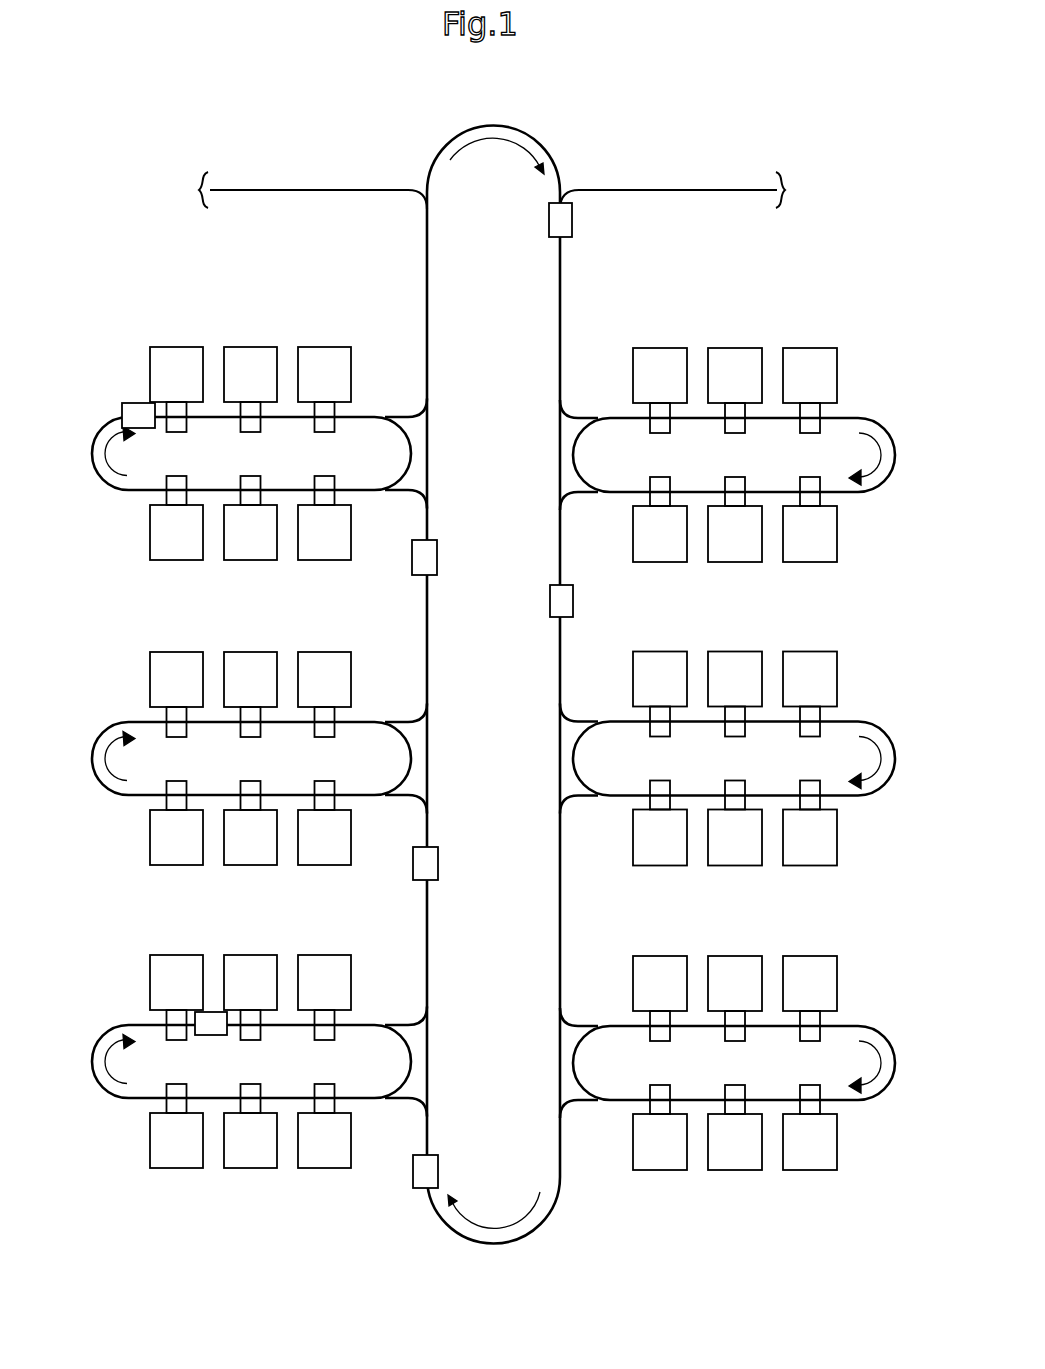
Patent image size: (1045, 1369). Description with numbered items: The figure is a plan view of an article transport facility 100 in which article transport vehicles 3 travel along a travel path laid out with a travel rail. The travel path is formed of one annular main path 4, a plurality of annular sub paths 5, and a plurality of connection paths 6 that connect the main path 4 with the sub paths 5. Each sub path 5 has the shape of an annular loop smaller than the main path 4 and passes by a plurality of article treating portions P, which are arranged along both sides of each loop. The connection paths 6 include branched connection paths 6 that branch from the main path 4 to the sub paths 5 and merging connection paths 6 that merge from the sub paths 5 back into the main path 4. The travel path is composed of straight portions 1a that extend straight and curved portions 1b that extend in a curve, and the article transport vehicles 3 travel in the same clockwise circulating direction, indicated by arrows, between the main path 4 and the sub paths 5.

The article transport facility 100 is at (688, 144).
The main path 4 is at (510, 686).
The sub path 5 is at (113, 490).
The connection path 6 is at (377, 1185).
The article transport vehicle 3 is at (572, 218).
The article treating portion P is at (324, 347).
The straight portion 1a is at (427, 618).
The curved portion 1b is at (509, 126).